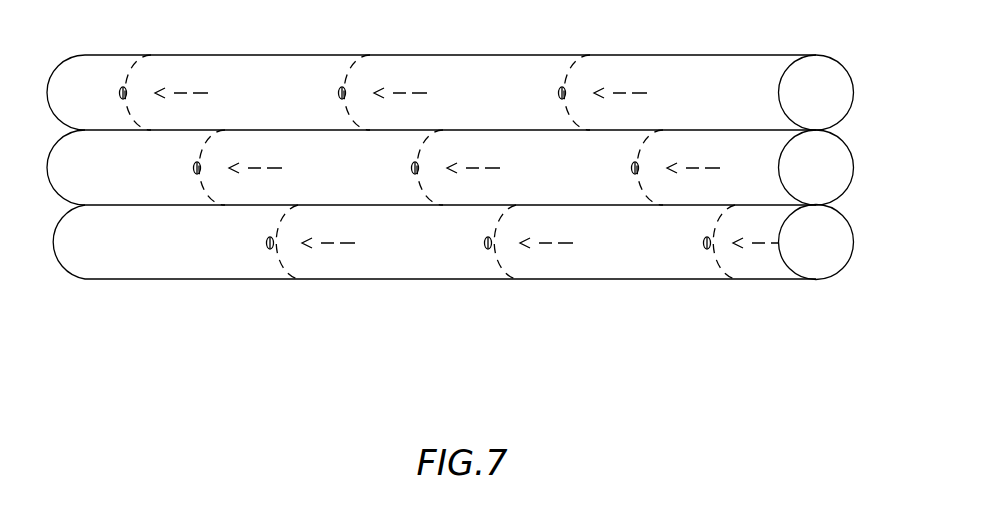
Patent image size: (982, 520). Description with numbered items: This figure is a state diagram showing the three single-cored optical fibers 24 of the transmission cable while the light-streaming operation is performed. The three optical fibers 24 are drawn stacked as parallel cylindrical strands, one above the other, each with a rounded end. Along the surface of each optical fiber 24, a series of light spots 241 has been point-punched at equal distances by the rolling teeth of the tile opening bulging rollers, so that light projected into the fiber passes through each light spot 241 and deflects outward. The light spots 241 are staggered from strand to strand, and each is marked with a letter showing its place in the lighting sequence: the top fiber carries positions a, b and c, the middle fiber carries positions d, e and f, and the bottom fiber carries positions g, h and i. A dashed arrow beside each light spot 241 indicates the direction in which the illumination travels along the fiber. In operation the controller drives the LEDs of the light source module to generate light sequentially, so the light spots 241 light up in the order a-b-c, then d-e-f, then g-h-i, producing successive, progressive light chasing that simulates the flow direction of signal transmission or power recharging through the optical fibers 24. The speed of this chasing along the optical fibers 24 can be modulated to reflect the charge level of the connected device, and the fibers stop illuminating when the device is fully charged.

The optical fiber 24 is at (648, 63).
The light spot 241 is at (559, 87).
The lighting order position a is at (164, 93).
The lighting order position b is at (383, 93).
The lighting order position c is at (611, 93).
The lighting order position d is at (238, 168).
The lighting order position e is at (456, 168).
The lighting order position f is at (676, 168).
The lighting order position g is at (311, 243).
The lighting order position h is at (529, 243).
The lighting order position i is at (741, 243).